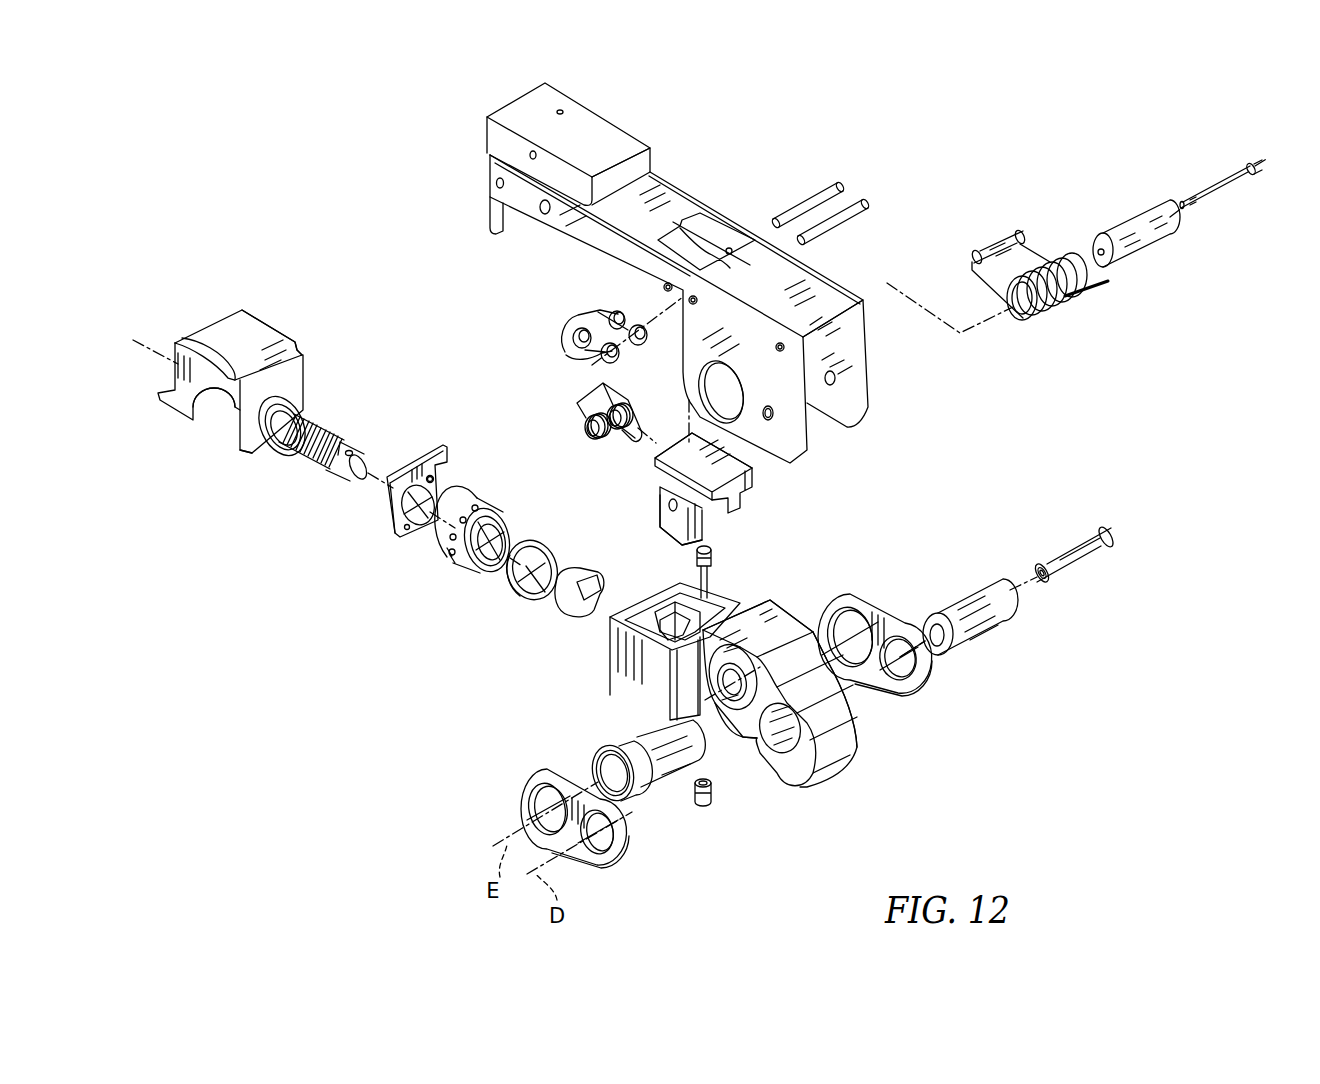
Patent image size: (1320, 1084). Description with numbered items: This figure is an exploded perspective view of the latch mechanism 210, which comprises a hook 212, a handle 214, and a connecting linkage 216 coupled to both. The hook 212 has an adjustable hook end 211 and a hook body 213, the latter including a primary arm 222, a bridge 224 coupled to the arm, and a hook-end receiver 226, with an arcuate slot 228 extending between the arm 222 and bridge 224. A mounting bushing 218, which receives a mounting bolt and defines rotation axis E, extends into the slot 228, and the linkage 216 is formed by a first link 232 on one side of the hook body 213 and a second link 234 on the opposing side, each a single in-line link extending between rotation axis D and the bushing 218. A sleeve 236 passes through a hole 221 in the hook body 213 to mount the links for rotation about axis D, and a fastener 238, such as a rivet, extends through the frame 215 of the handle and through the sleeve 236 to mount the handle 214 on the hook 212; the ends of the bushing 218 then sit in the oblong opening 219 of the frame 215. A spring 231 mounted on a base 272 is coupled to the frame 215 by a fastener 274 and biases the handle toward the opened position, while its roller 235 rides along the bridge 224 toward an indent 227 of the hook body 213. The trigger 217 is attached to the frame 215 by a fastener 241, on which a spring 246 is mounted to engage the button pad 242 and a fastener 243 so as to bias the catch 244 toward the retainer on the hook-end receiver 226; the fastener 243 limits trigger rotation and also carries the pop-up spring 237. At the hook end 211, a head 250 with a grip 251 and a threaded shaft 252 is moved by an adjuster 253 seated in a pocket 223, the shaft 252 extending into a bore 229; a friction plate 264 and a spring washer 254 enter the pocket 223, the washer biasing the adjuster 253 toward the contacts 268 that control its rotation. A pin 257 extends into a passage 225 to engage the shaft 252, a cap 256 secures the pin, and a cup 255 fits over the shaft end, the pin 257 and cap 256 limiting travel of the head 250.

The latch mechanism 210 is at (335, 215).
The adjustable hook end 211 is at (278, 305).
The hook 212 is at (210, 310).
The hook body 213 is at (812, 628).
The handle 214 is at (727, 215).
The frame 215 is at (803, 283).
The connecting linkage 216 is at (918, 617).
The trigger 217 is at (650, 487).
The mounting bushing 218 is at (590, 760).
The oblong opening 219 is at (745, 390).
The hole 221 is at (787, 752).
The primary arm 222 is at (727, 697).
The pocket 223 is at (655, 607).
The bridge 224 is at (753, 617).
The passage 225 is at (665, 630).
The hook-end receiver 226 is at (610, 673).
The indent 227 is at (825, 690).
The arcuate slot 228 is at (753, 657).
The bore 229 is at (728, 735).
The spring 231 is at (1068, 248).
The first link 232 is at (633, 850).
The second link 234 is at (866, 595).
The roller 235 is at (1007, 230).
The sleeve 236 is at (987, 590).
The pop-up spring 237 is at (571, 305).
The fastener 238 is at (1077, 543).
The fastener 241 is at (794, 198).
The button pad 242 is at (665, 477).
The fastener 243 is at (876, 216).
The catch 244 is at (667, 527).
The spring 246 is at (575, 385).
The head 250 is at (245, 462).
The grip 251 is at (210, 423).
The shaft 252 is at (283, 460).
The adjuster 253 is at (450, 568).
The spring washer 254 is at (505, 587).
The cup 255 is at (577, 557).
The cap 256 is at (703, 812).
The pin 257 is at (715, 548).
The friction plate 264 is at (395, 500).
The contacts 268 is at (432, 480).
The base 272 is at (1135, 210).
The fastener 274 is at (1215, 170).